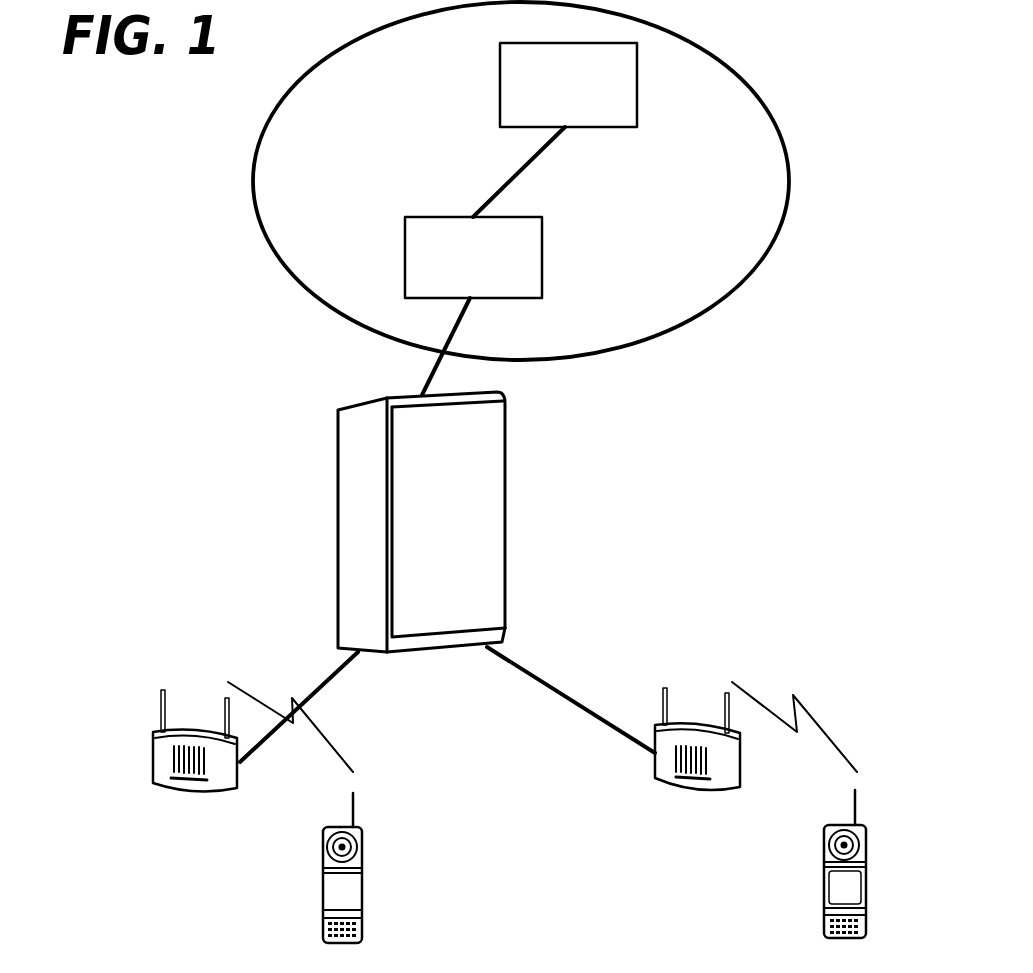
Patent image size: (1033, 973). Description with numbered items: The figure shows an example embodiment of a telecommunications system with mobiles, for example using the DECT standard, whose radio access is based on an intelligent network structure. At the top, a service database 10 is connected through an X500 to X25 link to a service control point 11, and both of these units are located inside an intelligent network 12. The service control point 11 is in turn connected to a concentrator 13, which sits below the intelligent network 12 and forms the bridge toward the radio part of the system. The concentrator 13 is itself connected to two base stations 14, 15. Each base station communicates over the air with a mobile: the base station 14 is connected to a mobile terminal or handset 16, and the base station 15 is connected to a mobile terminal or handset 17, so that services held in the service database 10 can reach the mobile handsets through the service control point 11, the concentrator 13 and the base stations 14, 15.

The service database 10 is at (500, 79).
The service control point 11 is at (542, 263).
The intelligent network 12 is at (258, 192).
The concentrator 13 is at (487, 482).
The base station 14 is at (153, 748).
The base station 15 is at (663, 760).
The mobile terminal 16 is at (350, 890).
The mobile terminal 17 is at (838, 888).